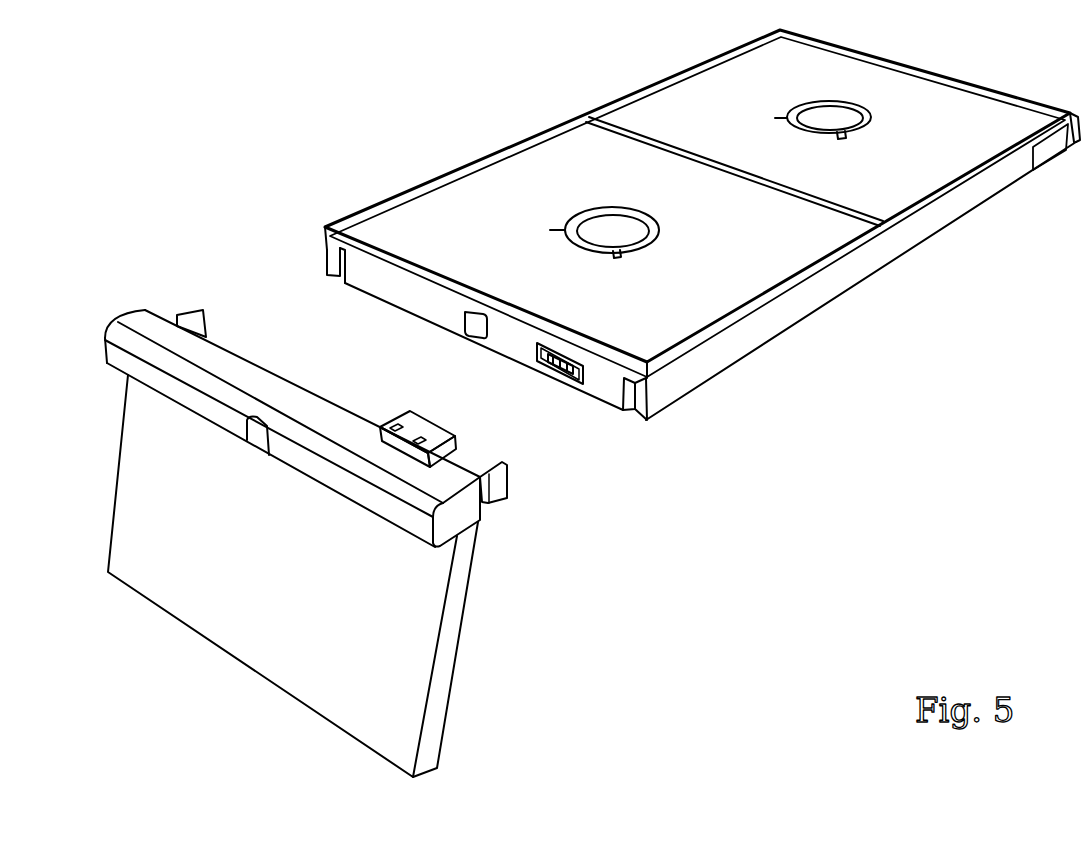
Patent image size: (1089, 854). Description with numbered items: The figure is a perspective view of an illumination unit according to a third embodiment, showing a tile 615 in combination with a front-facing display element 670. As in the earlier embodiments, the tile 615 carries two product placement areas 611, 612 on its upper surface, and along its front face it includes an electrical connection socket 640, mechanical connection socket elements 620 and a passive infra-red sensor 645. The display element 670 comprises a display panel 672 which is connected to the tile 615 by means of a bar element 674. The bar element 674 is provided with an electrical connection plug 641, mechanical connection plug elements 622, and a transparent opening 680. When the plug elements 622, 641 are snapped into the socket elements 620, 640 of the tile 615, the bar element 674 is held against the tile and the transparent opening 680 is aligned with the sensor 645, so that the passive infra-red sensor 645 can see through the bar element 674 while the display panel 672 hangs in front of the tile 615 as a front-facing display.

The product placement area 611 is at (540, 168).
The product placement area 612 is at (727, 92).
The tile 615 is at (887, 308).
The mechanical connection socket element 620 is at (326, 262).
The mechanical connection plug element 622 is at (185, 307).
The electrical connection socket 640 is at (563, 376).
The electrical connection plug 641 is at (397, 411).
The passive infra-red sensor 645 is at (474, 323).
The front-facing display element 670 is at (361, 508).
The display panel 672 is at (411, 664).
The bar element 674 is at (224, 382).
The transparent opening 680 is at (253, 444).